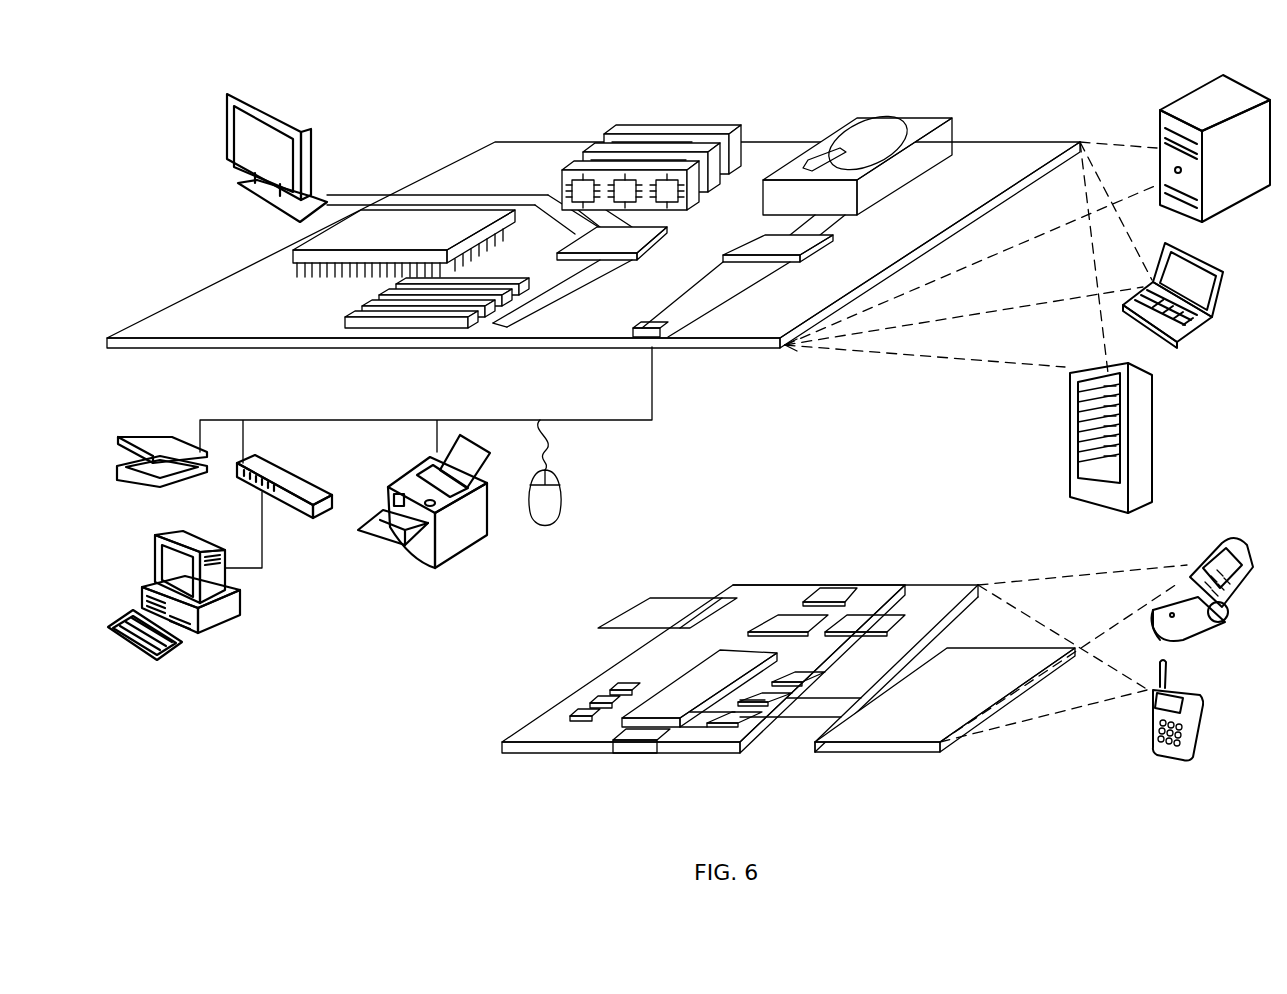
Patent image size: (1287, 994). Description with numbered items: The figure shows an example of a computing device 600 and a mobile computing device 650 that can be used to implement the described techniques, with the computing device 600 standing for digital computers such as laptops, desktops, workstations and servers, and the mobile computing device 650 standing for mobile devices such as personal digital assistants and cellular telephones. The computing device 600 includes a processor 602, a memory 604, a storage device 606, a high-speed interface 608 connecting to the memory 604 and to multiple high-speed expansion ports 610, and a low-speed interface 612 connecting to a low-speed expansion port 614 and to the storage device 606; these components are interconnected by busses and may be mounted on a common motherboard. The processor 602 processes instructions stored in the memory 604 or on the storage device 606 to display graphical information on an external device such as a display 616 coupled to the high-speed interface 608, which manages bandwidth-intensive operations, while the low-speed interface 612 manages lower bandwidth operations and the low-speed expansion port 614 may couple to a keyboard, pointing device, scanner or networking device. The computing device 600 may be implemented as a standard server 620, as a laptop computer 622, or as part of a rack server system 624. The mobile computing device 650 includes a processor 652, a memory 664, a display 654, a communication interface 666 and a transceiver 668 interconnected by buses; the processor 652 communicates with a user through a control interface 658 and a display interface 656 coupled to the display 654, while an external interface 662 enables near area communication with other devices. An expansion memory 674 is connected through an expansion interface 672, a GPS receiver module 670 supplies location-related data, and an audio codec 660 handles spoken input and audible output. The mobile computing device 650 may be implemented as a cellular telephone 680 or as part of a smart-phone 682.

The computing device 600 is at (418, 115).
The processor 602 is at (292, 256).
The memory 604 is at (618, 128).
The storage device 606 is at (845, 118).
The high-speed interface 608 is at (565, 228).
The high-speed expansion ports 610 is at (345, 310).
The low-speed interface 612 is at (763, 243).
The low-speed expansion port 614 is at (655, 340).
The display 616 is at (228, 96).
The standard server 620 is at (1160, 130).
The laptop computer 622 is at (1222, 272).
The rack server system 624 is at (1070, 463).
The mobile computing device 650 is at (485, 748).
The processor 652 is at (675, 712).
The display 654 is at (905, 730).
The display interface 656 is at (740, 722).
The control interface 658 is at (775, 703).
The audio codec 660 is at (800, 682).
The external interface 662 is at (638, 742).
The memory 664 is at (590, 703).
The communication interface 666 is at (797, 620).
The transceiver 668 is at (865, 618).
The GPS receiver module 670 is at (840, 588).
The expansion interface 672 is at (722, 598).
The expansion memory 674 is at (650, 600).
The cellular telephone 680 is at (1208, 552).
The smart-phone 682 is at (1148, 722).